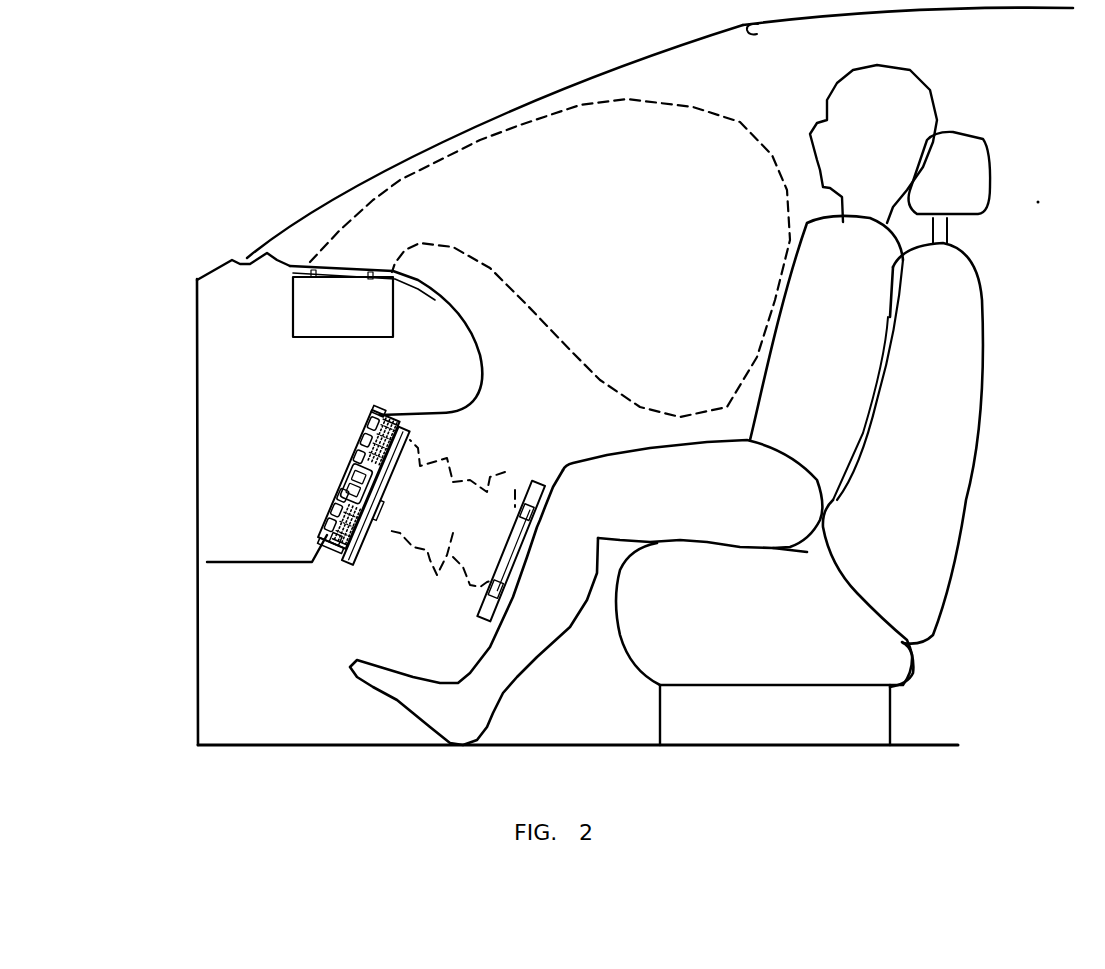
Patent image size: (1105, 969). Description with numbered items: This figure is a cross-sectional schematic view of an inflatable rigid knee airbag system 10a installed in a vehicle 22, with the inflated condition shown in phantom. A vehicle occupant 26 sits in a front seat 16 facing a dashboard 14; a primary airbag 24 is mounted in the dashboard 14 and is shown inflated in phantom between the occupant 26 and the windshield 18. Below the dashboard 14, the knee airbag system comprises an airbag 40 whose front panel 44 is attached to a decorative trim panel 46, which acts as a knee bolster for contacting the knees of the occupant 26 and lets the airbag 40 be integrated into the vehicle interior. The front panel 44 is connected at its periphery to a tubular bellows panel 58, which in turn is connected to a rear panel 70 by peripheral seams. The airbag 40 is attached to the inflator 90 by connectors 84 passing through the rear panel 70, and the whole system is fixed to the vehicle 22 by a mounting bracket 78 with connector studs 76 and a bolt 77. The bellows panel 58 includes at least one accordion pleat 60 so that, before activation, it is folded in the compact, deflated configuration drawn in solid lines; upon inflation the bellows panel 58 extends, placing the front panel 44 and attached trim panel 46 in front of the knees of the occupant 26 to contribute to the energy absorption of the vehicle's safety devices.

The rigid knee airbag system 10a is at (420, 605).
The dashboard 14 is at (436, 386).
The front seat 16 is at (788, 652).
The windshield 18 is at (395, 162).
The vehicle 22 is at (439, 96).
The primary airbag 24 is at (583, 140).
The vehicle occupant 26 is at (843, 380).
The airbag 40 is at (343, 547).
The front panel 44 is at (413, 428).
The decorative trim panel 46 is at (382, 513).
The bellows panel 58 is at (347, 550).
The accordion pleat 60 is at (505, 472).
The rear panel 70 is at (373, 410).
The connector studs 76 is at (390, 418).
The bolt 77 is at (382, 415).
The mounting bracket 78 is at (373, 417).
The connectors 84 is at (370, 430).
The inflator 90 is at (347, 477).